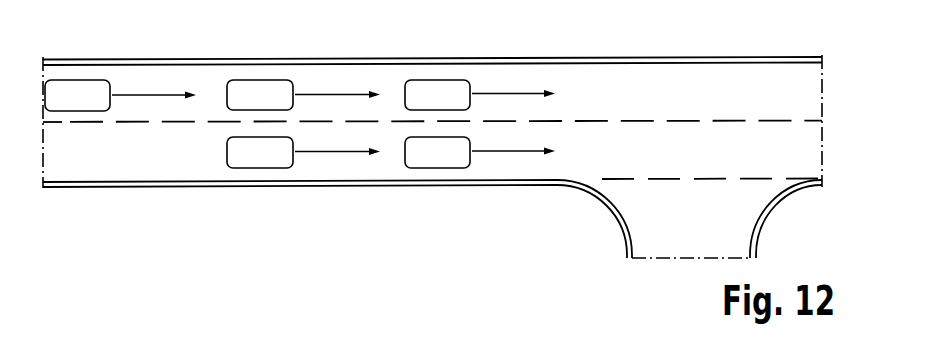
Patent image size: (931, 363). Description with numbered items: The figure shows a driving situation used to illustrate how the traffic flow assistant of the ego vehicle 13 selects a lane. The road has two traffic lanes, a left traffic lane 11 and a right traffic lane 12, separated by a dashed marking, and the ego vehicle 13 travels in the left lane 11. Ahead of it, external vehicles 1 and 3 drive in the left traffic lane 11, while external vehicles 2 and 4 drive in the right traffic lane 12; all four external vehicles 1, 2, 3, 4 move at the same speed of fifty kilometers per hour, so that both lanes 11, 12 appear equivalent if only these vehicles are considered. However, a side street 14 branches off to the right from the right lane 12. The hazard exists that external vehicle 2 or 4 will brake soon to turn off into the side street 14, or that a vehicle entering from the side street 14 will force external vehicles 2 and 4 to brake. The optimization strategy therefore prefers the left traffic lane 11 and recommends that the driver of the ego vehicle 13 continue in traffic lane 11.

The external vehicle 1 is at (253, 103).
The external vehicle 2 is at (253, 164).
The external vehicle 3 is at (430, 103).
The external vehicle 4 is at (430, 164).
The traffic lane 11 is at (766, 103).
The traffic lane 12 is at (766, 162).
The ego vehicle 13 is at (90, 105).
The side street 14 is at (705, 237).